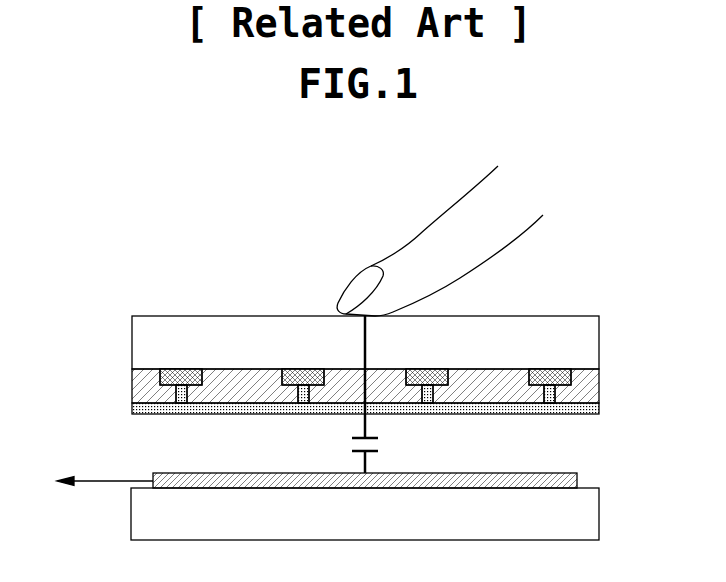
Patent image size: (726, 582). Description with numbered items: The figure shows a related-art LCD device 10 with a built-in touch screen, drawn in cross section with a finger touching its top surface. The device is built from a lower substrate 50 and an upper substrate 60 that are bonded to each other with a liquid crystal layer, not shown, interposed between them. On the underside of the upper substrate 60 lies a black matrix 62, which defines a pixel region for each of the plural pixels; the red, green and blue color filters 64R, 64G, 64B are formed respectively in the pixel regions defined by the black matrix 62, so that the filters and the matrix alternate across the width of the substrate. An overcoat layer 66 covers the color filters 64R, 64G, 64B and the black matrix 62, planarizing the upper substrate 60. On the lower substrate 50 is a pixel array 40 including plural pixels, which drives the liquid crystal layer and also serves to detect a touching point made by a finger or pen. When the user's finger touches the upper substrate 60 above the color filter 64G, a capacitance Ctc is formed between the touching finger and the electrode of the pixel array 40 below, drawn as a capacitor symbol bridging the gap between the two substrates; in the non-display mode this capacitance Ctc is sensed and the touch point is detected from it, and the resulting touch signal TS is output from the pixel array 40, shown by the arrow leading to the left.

The touch display device (related art) 10 is at (305, 206).
The upper substrate 60 is at (592, 343).
The black matrix 62 is at (560, 378).
The red color filter 64R is at (242, 386).
The green color filter 64G is at (365, 386).
The blue color filter 64B is at (489, 386).
The overcoat layer 66 is at (590, 408).
The capacitance Ctc is at (384, 394).
The pixel array 40 is at (565, 483).
The lower substrate 50 is at (592, 515).
The touch signal TS is at (89, 481).